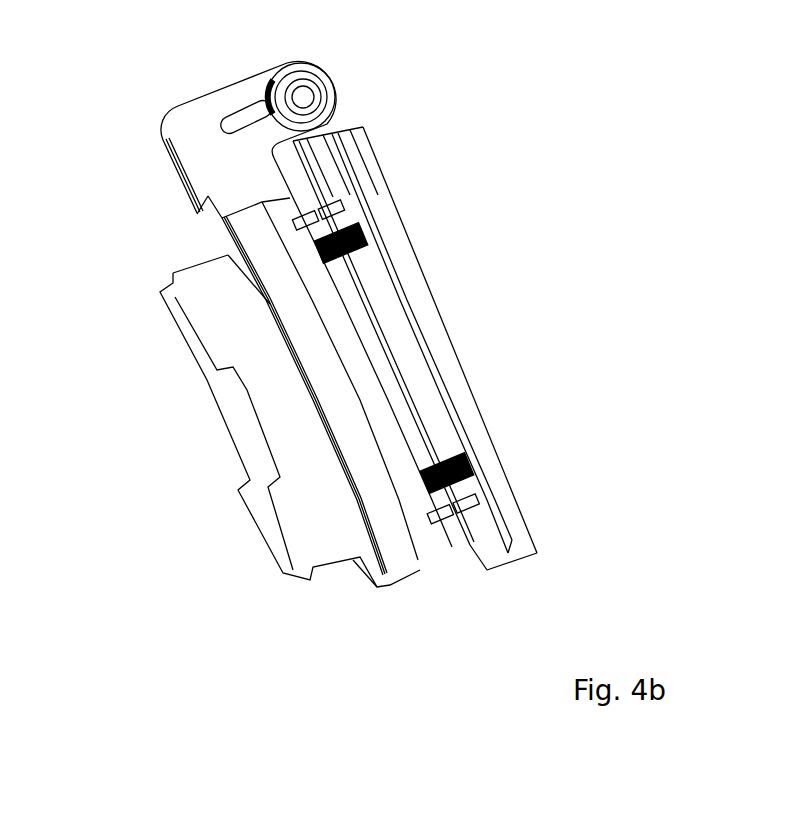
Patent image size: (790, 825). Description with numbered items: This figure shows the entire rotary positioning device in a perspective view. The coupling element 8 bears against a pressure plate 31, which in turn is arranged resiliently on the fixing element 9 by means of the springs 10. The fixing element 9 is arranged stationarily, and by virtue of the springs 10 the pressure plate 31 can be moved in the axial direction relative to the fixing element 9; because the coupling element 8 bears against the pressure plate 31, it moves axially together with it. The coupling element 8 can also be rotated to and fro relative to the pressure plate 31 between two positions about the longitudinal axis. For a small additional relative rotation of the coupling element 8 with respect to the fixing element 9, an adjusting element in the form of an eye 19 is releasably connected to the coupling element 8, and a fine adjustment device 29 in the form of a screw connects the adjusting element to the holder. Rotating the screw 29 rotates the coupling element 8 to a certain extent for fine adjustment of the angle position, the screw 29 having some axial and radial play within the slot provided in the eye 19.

The coupling element 8 is at (393, 563).
The fixing element 9 is at (430, 317).
The springs 10 is at (463, 497).
The eye 19 is at (240, 121).
The fine adjustment device 29 is at (312, 93).
The pressure plate 31 is at (347, 243).